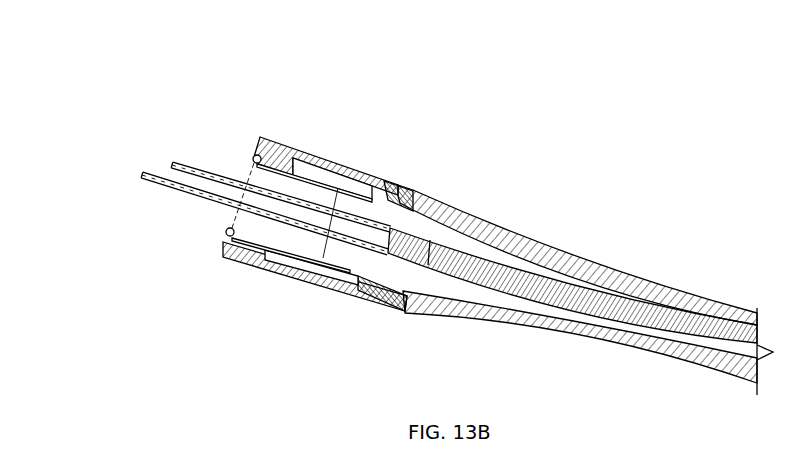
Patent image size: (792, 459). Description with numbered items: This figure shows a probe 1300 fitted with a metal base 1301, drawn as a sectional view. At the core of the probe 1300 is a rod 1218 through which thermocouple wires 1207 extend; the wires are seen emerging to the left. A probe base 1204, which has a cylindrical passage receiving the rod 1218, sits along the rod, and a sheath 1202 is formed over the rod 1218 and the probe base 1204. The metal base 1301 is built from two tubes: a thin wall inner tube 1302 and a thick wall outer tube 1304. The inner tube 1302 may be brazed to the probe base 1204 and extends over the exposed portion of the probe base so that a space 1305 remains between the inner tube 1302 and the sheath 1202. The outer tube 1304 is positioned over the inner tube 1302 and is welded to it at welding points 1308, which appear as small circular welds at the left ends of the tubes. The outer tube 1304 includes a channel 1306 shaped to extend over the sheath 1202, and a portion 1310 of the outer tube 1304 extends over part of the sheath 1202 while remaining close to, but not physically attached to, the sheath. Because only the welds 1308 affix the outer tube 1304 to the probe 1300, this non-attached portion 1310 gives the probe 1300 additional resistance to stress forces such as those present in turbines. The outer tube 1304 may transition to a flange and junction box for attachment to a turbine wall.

The probe 1300 is at (184, 62).
The sheath 1202 is at (566, 244).
The probe base 1204 is at (502, 246).
The metal base 1301 is at (316, 139).
The inner tube 1302 is at (275, 176).
The space 1305 is at (372, 189).
The portion of the outer tube 1310 is at (442, 196).
The welding points 1308 is at (246, 156).
The channel 1306 is at (308, 267).
The outer tube 1304 is at (246, 248).
The thermocouple wires 1207 is at (177, 176).
The rod 1218 is at (695, 339).